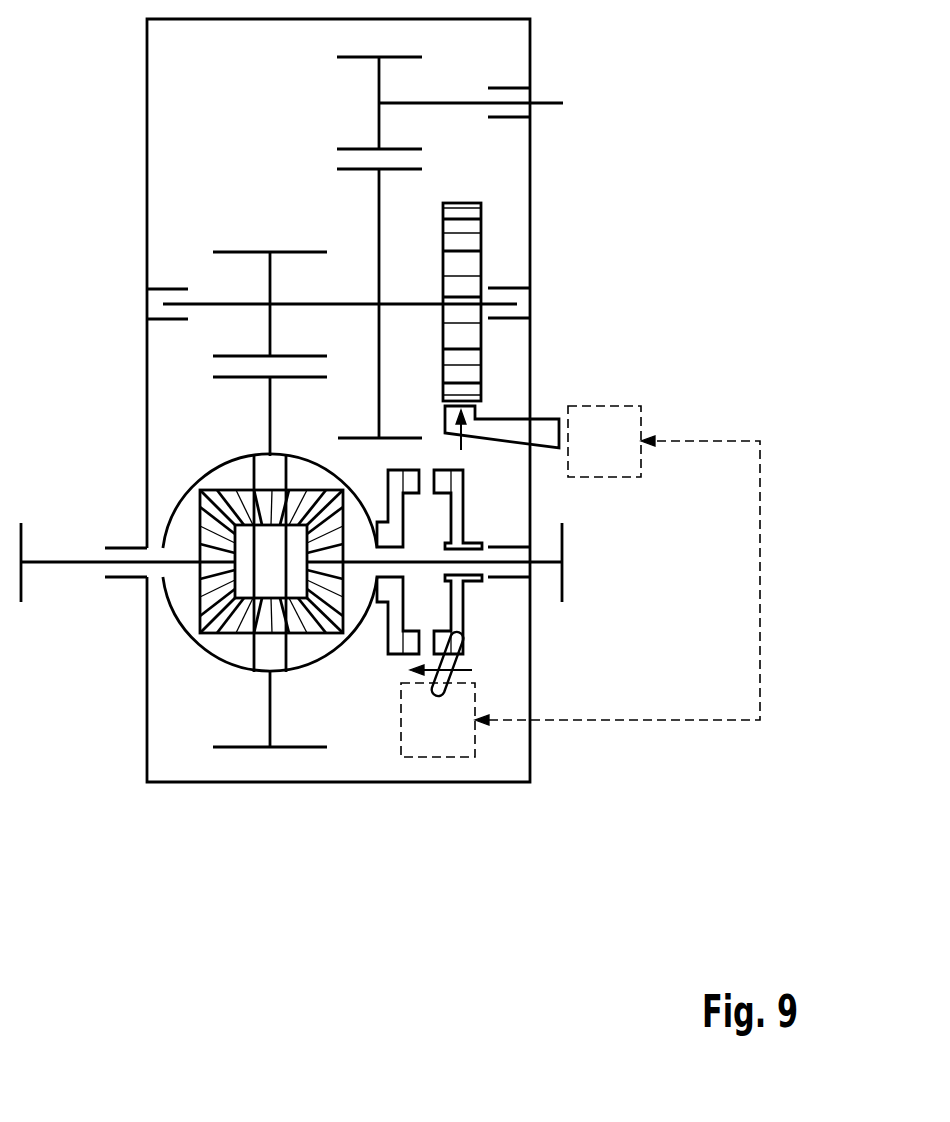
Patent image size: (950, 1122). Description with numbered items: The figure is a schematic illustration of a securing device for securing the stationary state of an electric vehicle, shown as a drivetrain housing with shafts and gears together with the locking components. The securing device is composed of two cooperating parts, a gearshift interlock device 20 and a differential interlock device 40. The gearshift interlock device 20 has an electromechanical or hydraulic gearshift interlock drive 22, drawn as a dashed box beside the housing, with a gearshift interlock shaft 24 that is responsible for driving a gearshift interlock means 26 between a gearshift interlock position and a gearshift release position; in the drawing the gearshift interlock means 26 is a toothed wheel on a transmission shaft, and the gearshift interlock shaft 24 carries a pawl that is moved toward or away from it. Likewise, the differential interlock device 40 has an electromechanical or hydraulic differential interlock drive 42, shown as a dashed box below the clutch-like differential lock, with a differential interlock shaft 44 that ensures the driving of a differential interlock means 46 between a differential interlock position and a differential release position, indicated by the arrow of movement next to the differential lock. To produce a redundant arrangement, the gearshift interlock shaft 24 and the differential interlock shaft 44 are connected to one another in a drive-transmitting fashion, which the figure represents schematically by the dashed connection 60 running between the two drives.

The gearshift interlock device 20 is at (606, 340).
The gearshift interlock drive 22 is at (625, 402).
The gearshift interlock shaft 24 is at (538, 460).
The gearshift interlock means 26 is at (477, 407).
The differential interlock device 40 is at (545, 686).
The differential interlock drive 42 is at (436, 766).
The differential interlock shaft 44 is at (480, 660).
The differential interlock means 46 is at (460, 648).
The drive-transmitting connection 60 is at (760, 653).